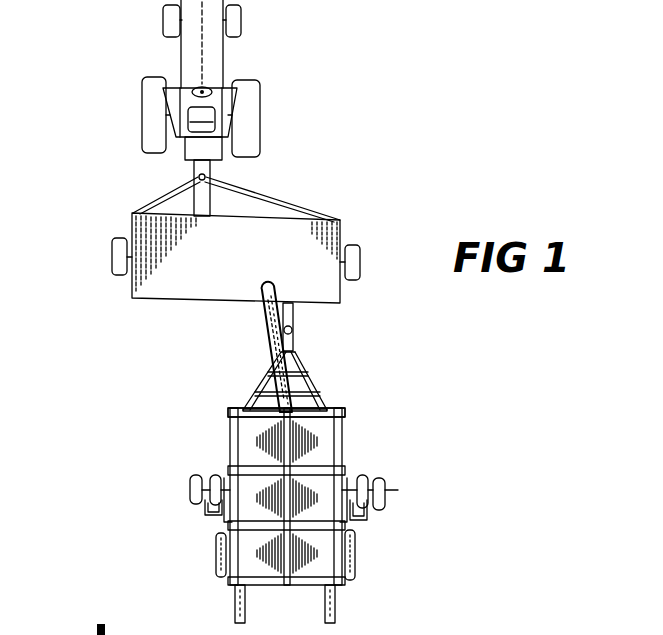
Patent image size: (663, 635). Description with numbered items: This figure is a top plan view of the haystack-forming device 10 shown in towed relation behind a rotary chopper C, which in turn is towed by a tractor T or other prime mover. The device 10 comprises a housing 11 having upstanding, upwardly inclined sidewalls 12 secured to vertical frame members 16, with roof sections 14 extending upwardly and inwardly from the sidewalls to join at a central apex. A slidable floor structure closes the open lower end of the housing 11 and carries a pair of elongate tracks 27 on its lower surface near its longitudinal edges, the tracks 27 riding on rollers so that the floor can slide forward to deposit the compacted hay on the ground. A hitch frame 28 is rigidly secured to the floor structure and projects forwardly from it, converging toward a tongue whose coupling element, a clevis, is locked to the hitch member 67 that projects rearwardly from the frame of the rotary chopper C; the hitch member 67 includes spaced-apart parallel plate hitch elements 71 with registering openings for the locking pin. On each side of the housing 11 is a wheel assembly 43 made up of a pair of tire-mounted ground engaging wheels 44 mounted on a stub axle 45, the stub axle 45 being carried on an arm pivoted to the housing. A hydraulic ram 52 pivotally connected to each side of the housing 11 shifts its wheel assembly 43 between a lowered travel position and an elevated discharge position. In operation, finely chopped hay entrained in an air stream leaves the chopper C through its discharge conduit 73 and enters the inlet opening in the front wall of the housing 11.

The tractor T is at (150, 39).
The rotary chopper C is at (110, 239).
The haystack-forming device 10 is at (455, 369).
The housing 11 is at (216, 424).
The sidewalls 12 is at (348, 417).
The roof sections 14 is at (278, 572).
The vertical frame members 16 is at (341, 410).
The tracks 27 is at (340, 603).
The hitch frame 28 is at (244, 391).
The wheel assemblies 43 is at (402, 487).
The ground engaging wheels 44 is at (198, 475).
The stub axle 45 is at (188, 490).
The hydraulic ram 52 is at (216, 558).
The hitch member 67 is at (312, 326).
The hitch elements 71 is at (300, 318).
The discharge conduit 73 is at (268, 325).